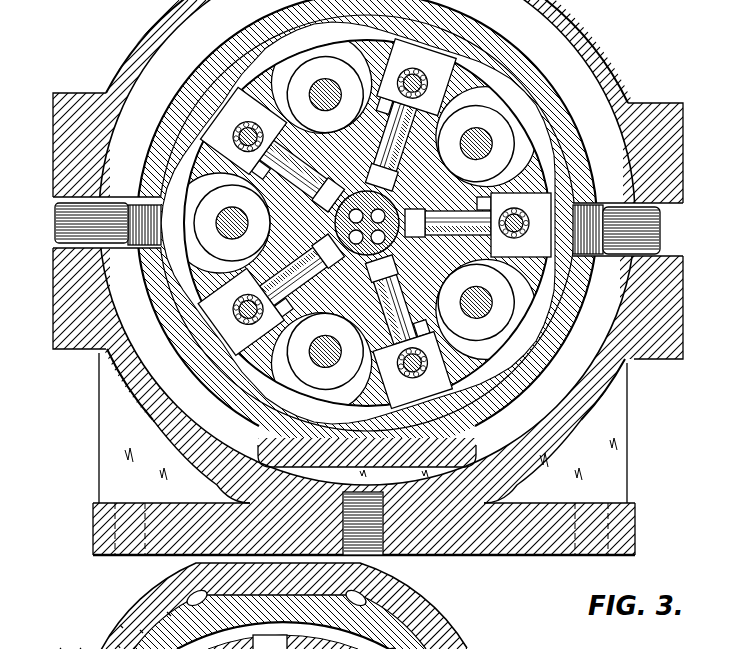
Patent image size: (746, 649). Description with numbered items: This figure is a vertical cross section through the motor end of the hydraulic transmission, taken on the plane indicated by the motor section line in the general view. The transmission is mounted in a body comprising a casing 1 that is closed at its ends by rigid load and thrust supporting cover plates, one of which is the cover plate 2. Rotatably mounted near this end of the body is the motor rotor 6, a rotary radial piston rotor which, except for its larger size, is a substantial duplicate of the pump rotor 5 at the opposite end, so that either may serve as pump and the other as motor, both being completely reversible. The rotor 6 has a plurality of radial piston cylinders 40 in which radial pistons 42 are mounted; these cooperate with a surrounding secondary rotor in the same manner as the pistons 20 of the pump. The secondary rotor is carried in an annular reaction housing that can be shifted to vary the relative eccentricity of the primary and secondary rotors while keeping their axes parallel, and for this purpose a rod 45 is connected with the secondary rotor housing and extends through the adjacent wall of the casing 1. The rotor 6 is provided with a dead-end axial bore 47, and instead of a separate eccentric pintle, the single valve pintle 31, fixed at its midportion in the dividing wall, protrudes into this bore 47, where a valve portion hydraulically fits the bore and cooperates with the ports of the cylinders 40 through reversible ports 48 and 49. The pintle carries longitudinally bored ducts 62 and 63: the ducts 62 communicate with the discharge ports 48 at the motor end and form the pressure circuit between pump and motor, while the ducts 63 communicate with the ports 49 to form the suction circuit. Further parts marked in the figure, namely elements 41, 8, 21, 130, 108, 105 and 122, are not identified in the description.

The casing 1 is at (48, 221).
The cover plate 2 is at (605, 395).
The motor rotor 6 is at (527, 152).
The valve pintle 31 is at (345, 218).
The radial piston cylinders 40 is at (395, 178).
The cam ring 41 is at (500, 43).
The radial pistons 42 is at (452, 105).
The rod 45 is at (74, 221).
The dead end axial bore 47 is at (362, 258).
The reversible ports 48 is at (332, 183).
The reversible ports 49 is at (318, 257).
The ducts 62 is at (455, 163).
The ducts 63 is at (424, 222).
The pistons 20 is at (352, 640).
The inner ring 8 is at (395, 648).
The wall 21 is at (167, 612).
The ring 130 is at (140, 630).
The ring 108 is at (120, 625).
The ring 105 is at (118, 645).
The ring 122 is at (80, 648).
The pump rotor 5 is at (50, 644).